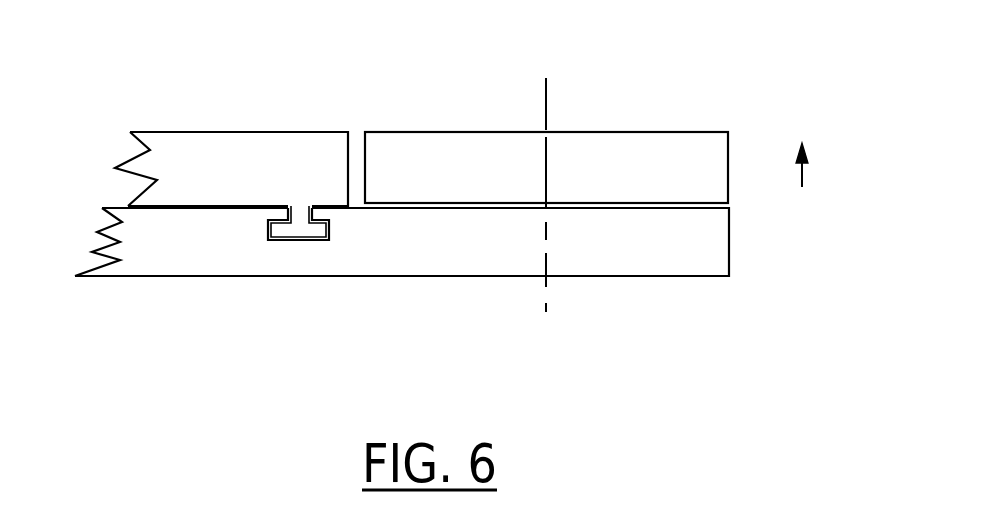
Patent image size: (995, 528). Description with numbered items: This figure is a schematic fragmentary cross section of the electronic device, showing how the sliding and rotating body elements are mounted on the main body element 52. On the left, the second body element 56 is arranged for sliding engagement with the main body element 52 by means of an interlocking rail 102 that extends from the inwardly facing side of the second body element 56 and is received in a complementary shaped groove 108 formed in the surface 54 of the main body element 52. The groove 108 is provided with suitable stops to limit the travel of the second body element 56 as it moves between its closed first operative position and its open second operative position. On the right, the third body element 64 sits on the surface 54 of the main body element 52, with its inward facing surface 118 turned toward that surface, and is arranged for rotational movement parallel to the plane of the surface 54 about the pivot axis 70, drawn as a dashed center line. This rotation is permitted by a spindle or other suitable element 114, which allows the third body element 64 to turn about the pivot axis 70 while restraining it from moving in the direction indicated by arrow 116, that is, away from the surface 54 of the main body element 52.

The main body element 52 is at (642, 267).
The surface of the main body element 54 is at (703, 205).
The second body element 56 is at (238, 140).
The third body element 64 is at (673, 140).
The pivot axis 70 is at (546, 107).
The rail 102 is at (270, 234).
The groove 108 is at (329, 236).
The spindle 114 is at (557, 205).
The arrow 116 is at (807, 167).
The inward facing surface of the third body element 118 is at (412, 203).